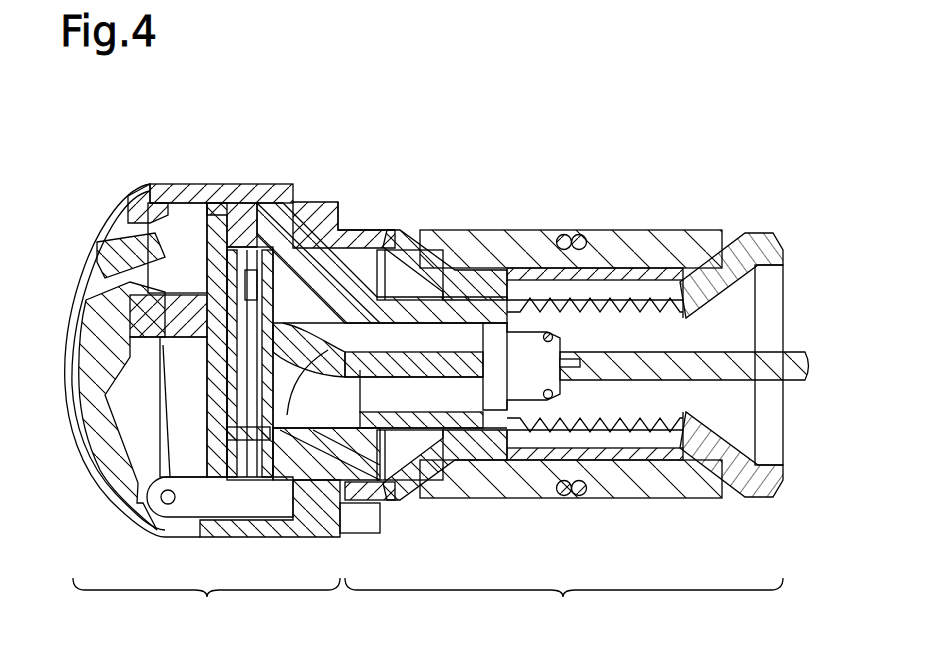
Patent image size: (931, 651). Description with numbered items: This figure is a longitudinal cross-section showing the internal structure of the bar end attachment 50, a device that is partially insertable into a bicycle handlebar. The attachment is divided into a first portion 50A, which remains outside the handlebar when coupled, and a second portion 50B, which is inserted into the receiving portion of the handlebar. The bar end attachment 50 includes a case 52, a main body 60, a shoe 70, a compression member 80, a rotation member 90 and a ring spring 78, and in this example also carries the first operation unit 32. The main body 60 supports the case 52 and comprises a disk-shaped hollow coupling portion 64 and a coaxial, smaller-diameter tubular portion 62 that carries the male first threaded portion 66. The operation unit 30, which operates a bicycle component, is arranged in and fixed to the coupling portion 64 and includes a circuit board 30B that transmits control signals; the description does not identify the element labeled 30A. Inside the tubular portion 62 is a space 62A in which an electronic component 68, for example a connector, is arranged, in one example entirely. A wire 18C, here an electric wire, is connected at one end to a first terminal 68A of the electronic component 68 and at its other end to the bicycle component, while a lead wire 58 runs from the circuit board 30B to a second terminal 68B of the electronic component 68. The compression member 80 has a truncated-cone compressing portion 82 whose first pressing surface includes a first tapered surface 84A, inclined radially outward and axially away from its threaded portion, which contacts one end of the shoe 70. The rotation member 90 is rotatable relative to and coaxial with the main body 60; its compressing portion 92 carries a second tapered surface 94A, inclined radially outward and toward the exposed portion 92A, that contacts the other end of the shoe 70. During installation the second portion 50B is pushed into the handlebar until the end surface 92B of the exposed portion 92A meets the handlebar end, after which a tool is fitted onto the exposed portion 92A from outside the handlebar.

The wire 18C is at (794, 352).
The operation unit 30 is at (250, 78).
The lens housing wall 30A is at (95, 428).
The circuit board 30B is at (228, 205).
The first operation unit 32 is at (170, 158).
The bar end attachment 50 is at (88, 150).
The first portion 50A is at (206, 601).
The second portion 50B is at (564, 601).
The case 52 is at (130, 192).
The lead wire 58 is at (276, 520).
The main body 60 is at (329, 79).
The tubular portion 62 is at (312, 222).
The space 62A is at (440, 398).
The coupling portion 64 is at (250, 203).
The first threaded portion 66 is at (602, 297).
The electronic component 68 is at (500, 400).
The first terminal 68A is at (575, 396).
The second terminal 68B is at (500, 394).
The shoe 70 is at (510, 206).
The ring spring 78 is at (566, 233).
The compression member 80 is at (774, 161).
The compressing portion 82 is at (781, 238).
The first tapered surface 84A is at (728, 242).
The rotation member 90 is at (377, 117).
The compressing portion 92 is at (333, 215).
The exposed portion 92A is at (325, 202).
The end surface 92B is at (350, 220).
The second tapered surface 94A is at (412, 232).